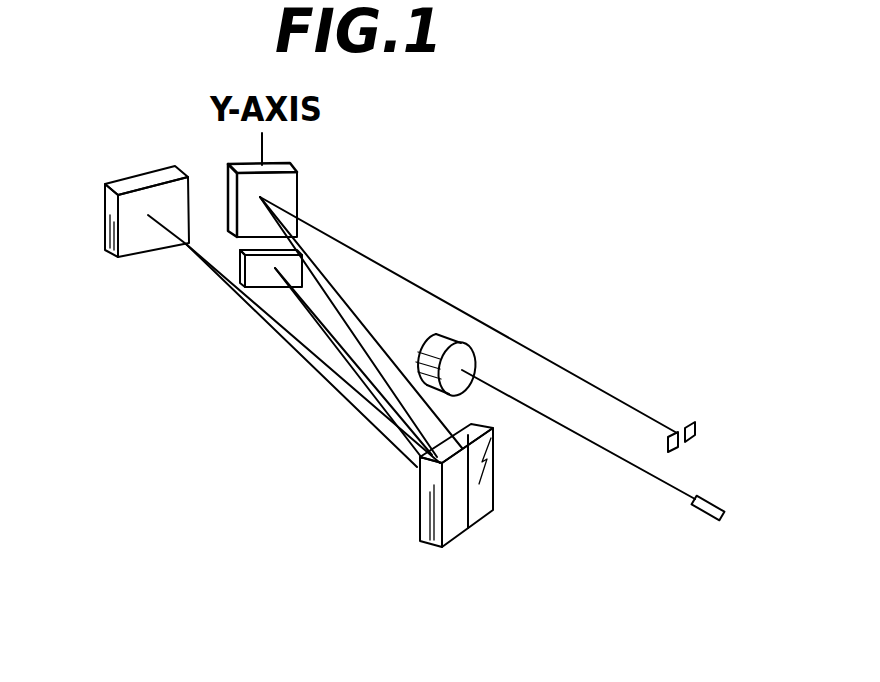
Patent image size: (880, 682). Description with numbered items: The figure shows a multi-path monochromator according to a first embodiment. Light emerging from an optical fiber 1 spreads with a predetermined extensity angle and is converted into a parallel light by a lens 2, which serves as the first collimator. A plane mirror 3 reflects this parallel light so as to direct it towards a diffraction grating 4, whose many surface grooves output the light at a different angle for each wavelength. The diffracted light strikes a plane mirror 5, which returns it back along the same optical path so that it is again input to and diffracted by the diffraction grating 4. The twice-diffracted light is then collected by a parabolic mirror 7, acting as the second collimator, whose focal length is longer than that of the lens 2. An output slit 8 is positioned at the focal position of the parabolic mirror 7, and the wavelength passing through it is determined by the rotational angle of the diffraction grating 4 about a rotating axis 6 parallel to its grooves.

The optical fiber 1 is at (705, 518).
The lens 2 is at (457, 333).
The plane mirror 3 is at (302, 270).
The diffraction grating 4 is at (495, 500).
The plane mirror 5 is at (104, 192).
The rotating axis 6 is at (455, 517).
The parabolic mirror 7 is at (298, 169).
The output slit 8 is at (698, 421).